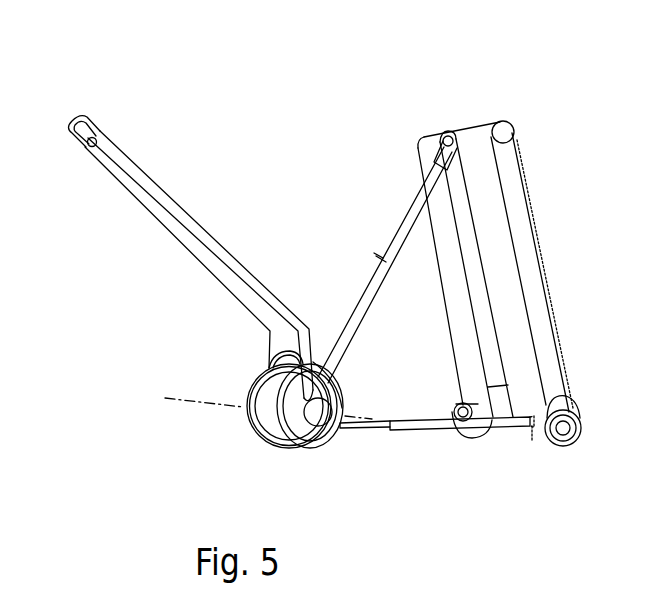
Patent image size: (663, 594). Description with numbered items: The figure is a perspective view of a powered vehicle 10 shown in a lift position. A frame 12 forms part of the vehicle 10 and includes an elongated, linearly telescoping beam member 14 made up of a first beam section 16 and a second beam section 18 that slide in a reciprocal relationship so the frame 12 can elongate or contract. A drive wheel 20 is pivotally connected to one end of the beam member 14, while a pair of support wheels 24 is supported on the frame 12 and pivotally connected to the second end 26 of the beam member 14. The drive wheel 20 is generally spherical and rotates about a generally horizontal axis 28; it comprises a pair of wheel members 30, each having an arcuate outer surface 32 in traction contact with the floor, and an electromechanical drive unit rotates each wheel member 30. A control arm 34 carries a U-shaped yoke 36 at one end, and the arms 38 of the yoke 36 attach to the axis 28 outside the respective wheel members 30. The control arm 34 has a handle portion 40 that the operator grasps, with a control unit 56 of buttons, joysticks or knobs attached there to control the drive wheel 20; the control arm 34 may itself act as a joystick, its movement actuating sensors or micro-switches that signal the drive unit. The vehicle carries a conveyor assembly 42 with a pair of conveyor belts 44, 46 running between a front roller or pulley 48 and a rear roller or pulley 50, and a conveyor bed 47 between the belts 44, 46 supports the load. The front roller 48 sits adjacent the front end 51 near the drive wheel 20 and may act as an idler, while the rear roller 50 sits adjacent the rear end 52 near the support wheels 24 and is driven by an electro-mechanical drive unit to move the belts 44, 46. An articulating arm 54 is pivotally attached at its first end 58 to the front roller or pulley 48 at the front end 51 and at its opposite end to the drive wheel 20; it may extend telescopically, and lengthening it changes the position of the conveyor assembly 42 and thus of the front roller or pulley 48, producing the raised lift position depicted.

The powered vehicle 10 is at (345, 134).
The frame 12 is at (424, 470).
The beam member 14 is at (400, 431).
The first beam section 16 is at (356, 428).
The second beam section 18 is at (490, 440).
The drive wheel 20 is at (346, 385).
The support wheels 24 is at (461, 407).
The second end of the beam member 26 is at (524, 433).
The axis 28 is at (207, 403).
The wheel members 30 is at (268, 398).
The arcuate outer surface 32 is at (268, 396).
The control arm 34 is at (197, 222).
The yoke 36 is at (265, 363).
The arms of the yoke 38 is at (327, 382).
The handle portion 40 is at (94, 147).
The conveyor assembly 42 is at (551, 240).
The conveyor belt 44 is at (522, 320).
The conveyor belt 46 is at (437, 262).
The conveyor bed 47 is at (537, 270).
The front roller or pulley 48 is at (514, 121).
The rear roller or pulley 50 is at (569, 400).
The front end 51 is at (487, 118).
The rear end 52 is at (561, 447).
The articulating arm 54 is at (367, 284).
The control unit 56 is at (78, 121).
The first end of the articulating arm 58 is at (449, 133).